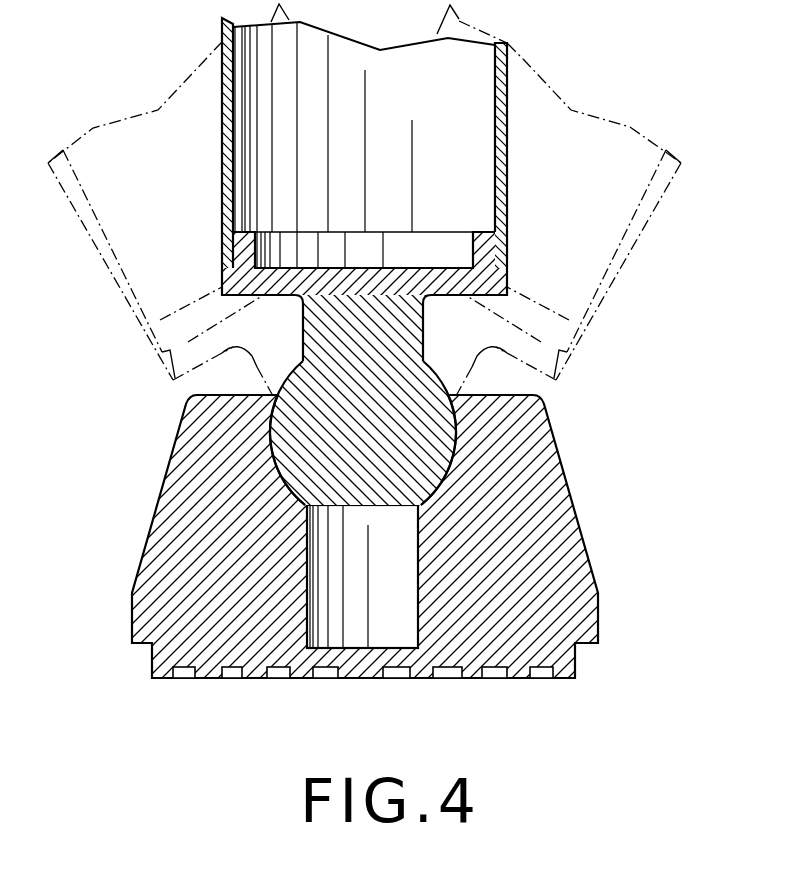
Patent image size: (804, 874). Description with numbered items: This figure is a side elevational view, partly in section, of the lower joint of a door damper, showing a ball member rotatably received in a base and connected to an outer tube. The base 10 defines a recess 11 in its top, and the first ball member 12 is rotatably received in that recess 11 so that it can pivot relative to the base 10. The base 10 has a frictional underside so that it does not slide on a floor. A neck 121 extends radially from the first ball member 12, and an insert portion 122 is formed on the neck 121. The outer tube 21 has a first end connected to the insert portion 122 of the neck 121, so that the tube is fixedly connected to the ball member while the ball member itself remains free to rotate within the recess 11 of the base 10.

The base 10 is at (550, 560).
The recess 11 is at (434, 473).
The first ball member 12 is at (452, 385).
The neck 121 is at (330, 330).
The insert portion 122 is at (250, 242).
The outer tube 21 is at (497, 178).